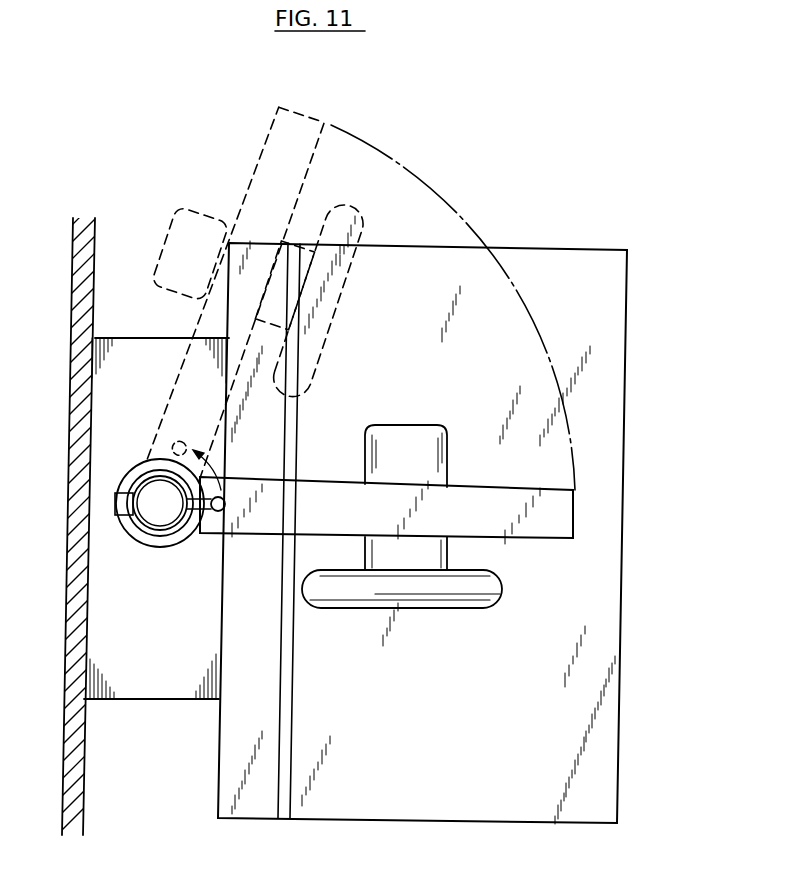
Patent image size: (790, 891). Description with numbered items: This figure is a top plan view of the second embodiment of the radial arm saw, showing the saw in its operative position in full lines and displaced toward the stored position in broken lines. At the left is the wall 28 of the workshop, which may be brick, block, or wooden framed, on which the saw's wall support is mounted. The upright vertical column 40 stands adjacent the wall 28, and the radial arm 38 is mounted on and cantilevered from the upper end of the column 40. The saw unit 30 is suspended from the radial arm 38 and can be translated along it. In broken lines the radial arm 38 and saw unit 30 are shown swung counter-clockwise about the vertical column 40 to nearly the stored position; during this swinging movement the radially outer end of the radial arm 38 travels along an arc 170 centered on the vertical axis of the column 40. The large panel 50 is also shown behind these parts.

The wall 28 is at (83, 277).
The saw unit 30 is at (452, 590).
The radial arm 38 is at (494, 507).
The vertical column 40 is at (130, 533).
The panel 50 is at (600, 317).
The arc 170 is at (453, 207).